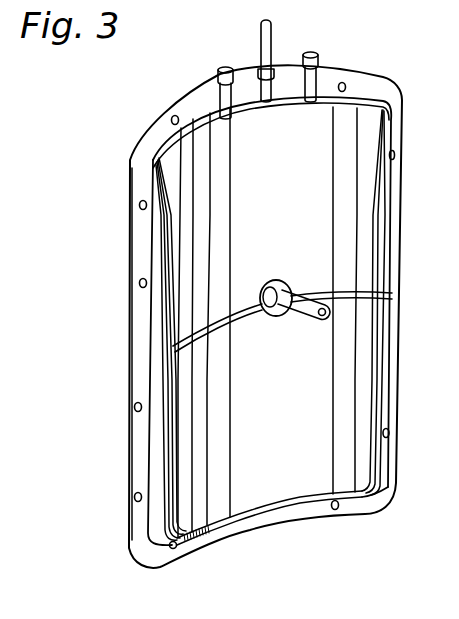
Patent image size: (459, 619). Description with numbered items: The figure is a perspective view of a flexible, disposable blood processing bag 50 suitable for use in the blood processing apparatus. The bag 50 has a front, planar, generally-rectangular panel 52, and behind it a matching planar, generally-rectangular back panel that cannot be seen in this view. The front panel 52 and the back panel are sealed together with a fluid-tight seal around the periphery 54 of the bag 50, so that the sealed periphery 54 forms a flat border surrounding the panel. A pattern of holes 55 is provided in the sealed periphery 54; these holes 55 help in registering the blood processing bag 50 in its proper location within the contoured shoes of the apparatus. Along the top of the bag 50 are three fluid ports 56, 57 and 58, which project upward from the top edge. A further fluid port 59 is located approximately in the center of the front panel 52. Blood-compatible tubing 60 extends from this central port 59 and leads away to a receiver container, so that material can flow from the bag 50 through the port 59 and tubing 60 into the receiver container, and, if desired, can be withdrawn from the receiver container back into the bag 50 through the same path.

The blood processing bag 50 is at (116, 287).
The front panel 52 is at (290, 419).
The periphery 54 is at (388, 416).
The holes 55 is at (347, 84).
The fluid port 56 is at (217, 82).
The fluid port 57 is at (277, 71).
The fluid port 58 is at (328, 72).
The fluid port 59 is at (283, 282).
The blood-compatible tubing 60 is at (317, 319).